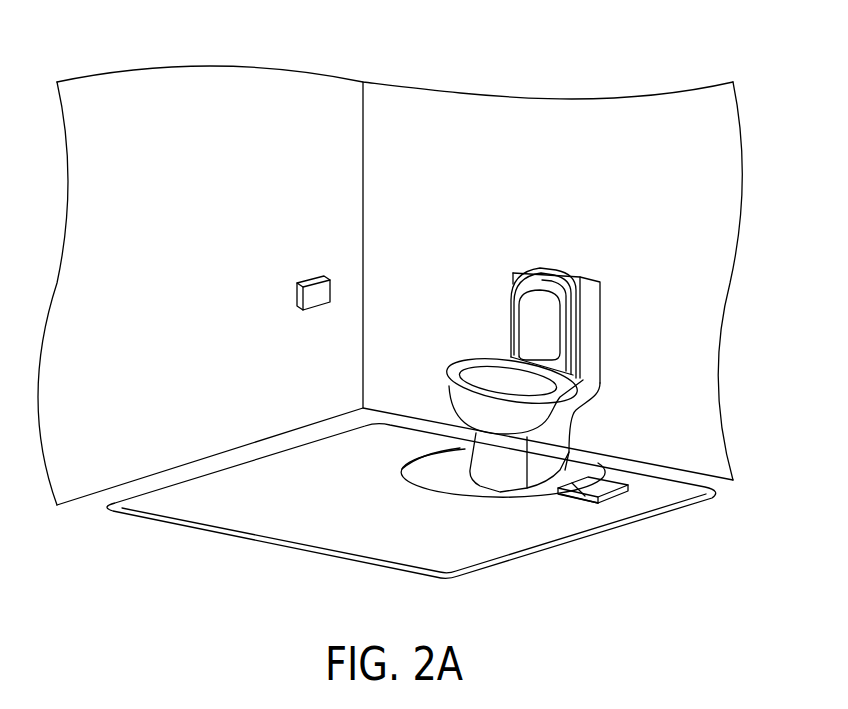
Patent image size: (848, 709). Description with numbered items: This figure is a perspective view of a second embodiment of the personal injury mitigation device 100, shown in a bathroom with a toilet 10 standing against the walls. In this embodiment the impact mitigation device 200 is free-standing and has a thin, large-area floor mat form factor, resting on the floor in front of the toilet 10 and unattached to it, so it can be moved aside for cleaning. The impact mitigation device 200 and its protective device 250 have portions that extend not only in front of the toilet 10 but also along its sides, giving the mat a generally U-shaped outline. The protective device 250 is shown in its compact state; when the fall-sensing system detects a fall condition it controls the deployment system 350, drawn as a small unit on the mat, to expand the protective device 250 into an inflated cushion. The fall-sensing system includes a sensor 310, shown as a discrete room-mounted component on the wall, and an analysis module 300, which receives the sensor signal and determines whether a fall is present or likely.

The toilet 10 is at (550, 442).
The personal injury mitigation device 100 is at (645, 425).
The impact mitigation device 200 is at (700, 498).
The protective device 250 is at (575, 540).
The analysis module 300 is at (573, 493).
The sensor 310 is at (307, 278).
The deployment system 350 is at (610, 494).